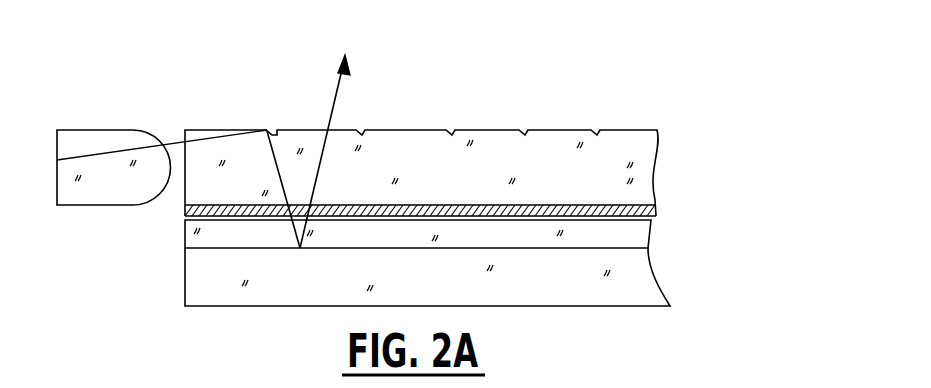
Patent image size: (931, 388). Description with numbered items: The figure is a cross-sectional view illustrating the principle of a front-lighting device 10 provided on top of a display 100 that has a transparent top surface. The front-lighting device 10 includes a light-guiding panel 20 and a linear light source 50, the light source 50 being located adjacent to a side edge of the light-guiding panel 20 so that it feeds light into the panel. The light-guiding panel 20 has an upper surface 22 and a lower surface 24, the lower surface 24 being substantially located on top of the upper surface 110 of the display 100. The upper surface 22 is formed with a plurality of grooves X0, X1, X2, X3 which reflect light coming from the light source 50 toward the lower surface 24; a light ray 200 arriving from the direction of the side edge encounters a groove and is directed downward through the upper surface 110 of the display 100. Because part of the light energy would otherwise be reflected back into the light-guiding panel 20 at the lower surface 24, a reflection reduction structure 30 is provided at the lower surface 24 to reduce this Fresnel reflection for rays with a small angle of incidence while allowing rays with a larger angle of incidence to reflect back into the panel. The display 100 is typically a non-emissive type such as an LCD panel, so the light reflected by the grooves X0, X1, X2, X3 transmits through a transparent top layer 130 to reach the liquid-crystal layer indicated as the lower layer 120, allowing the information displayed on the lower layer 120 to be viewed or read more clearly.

The front-lighting device 10 is at (135, 77).
The linear light source 50 is at (98, 137).
The light-guiding panel 20 is at (202, 188).
The upper surface 22 is at (668, 143).
The lower surface 24 is at (688, 197).
The reflection reduction structure 30 is at (660, 212).
The upper surface of the display 110 is at (188, 224).
The transparent top layer 130 is at (637, 236).
The lower layer 120 is at (233, 250).
The display 100 is at (675, 288).
The light ray 200 is at (327, 128).
The groove X0 is at (272, 128).
The groove X1 is at (362, 128).
The groove X2 is at (449, 128).
The groove X3 is at (525, 128).